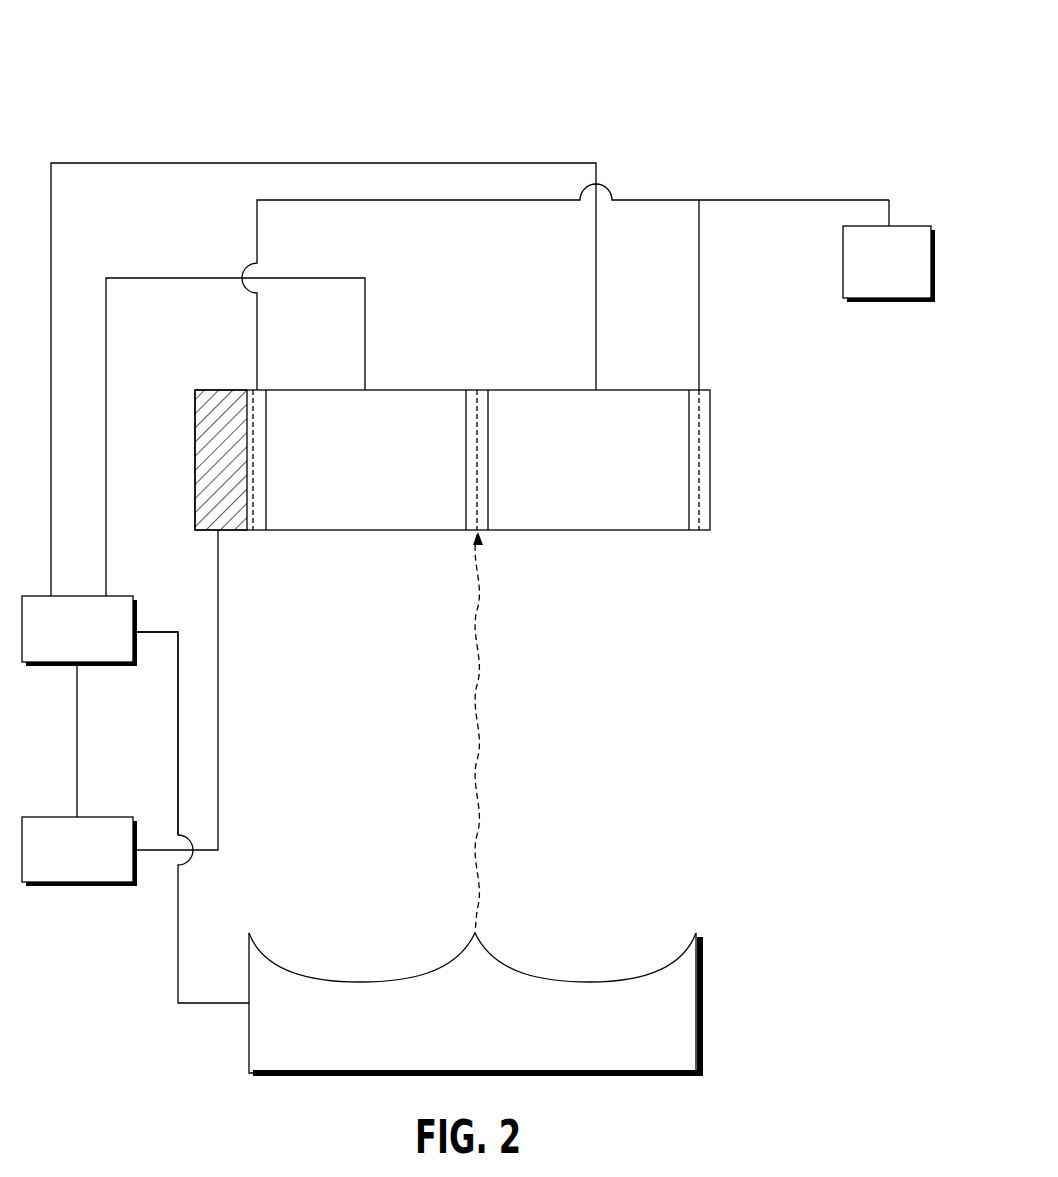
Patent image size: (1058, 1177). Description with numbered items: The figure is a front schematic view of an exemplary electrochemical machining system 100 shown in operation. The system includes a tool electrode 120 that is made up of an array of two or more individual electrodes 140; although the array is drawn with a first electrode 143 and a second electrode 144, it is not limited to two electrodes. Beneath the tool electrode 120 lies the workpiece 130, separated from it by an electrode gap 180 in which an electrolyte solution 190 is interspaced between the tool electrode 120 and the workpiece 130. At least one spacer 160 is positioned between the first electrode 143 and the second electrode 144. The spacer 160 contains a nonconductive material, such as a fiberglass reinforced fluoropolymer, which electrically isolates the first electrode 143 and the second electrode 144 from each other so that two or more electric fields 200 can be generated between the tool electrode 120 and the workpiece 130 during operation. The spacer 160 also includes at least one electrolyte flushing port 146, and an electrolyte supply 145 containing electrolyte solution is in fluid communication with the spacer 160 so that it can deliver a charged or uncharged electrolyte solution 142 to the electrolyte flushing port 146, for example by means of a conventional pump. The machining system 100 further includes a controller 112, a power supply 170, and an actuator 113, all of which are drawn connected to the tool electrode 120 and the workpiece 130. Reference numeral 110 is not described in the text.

The electrochemical machining system 100 is at (105, 62).
The fluid handling assembly 110 is at (812, 455).
The controller 112 is at (90, 865).
The actuator 113 is at (193, 460).
The tool electrode 120 is at (741, 437).
The workpiece 130 is at (488, 1020).
The array of two or more individual electrodes 140 is at (404, 352).
The electrolyte solution 142 is at (260, 540).
The first electrode 143 is at (381, 478).
The second electrode 144 is at (605, 478).
The electrolyte supply 145 is at (903, 283).
The electrolyte flushing port 146 is at (266, 424).
The spacer 160 is at (253, 390).
The power supply 170 is at (94, 645).
The electrode gap 180 is at (670, 895).
The electrolyte solution 190 is at (745, 786).
The electric fields 200 is at (381, 721).